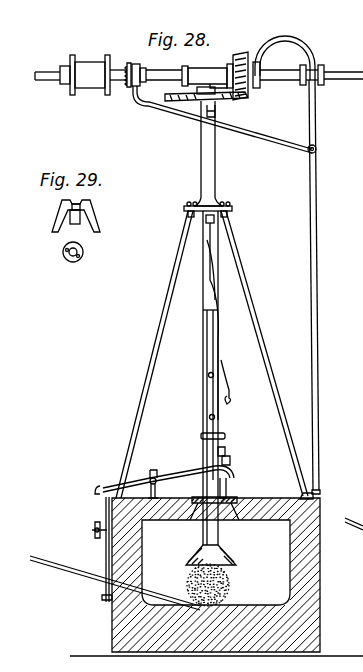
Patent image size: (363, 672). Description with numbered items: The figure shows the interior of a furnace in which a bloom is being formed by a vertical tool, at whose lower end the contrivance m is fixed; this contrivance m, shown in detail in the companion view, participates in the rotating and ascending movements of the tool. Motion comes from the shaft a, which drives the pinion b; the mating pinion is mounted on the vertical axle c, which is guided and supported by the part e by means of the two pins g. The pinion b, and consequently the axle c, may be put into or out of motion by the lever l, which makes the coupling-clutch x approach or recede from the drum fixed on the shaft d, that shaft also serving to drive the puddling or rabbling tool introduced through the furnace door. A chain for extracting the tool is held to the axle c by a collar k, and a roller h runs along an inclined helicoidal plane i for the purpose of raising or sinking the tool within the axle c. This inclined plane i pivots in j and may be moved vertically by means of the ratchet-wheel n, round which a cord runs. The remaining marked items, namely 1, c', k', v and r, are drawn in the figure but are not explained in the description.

In FIG. 28, the spool 1 is at (72, 75).
In FIG. 28, the coupling-clutch x is at (133, 70).
In FIG. 28, the shaft a is at (207, 76).
In FIG. 28, the pinion b is at (238, 76).
In FIG. 28, the pins g is at (206, 105).
In FIG. 28, the inclined helicoidal plane i is at (285, 58).
In FIG. 28, the lever l is at (311, 287).
In FIG. 28, the vertical axle c is at (208, 153).
In FIG. 28, the column flange c' is at (208, 202).
In FIG. 28, the shaft d is at (214, 353).
In FIG. 28, the part e is at (219, 321).
In FIG. 28, the collar k is at (217, 437).
In FIG. 28, the collar arm k' is at (222, 447).
In FIG. 28, the roller h is at (230, 459).
In FIG. 28, the pivot j is at (164, 479).
In FIG. 28, the pipe connection v is at (226, 484).
In FIG. 28, the ratchet-wheel n is at (214, 503).
In FIG. 28, the side bracket r is at (99, 536).
In FIG. 28, the contrivance m is at (226, 566).
In FIG. 29, the contrivance m is at (79, 231).